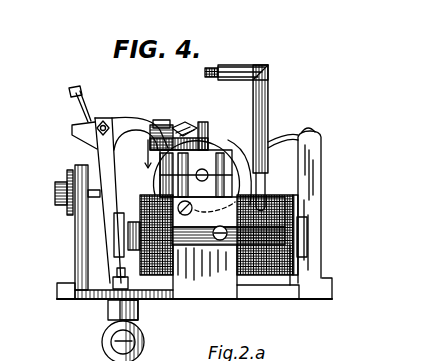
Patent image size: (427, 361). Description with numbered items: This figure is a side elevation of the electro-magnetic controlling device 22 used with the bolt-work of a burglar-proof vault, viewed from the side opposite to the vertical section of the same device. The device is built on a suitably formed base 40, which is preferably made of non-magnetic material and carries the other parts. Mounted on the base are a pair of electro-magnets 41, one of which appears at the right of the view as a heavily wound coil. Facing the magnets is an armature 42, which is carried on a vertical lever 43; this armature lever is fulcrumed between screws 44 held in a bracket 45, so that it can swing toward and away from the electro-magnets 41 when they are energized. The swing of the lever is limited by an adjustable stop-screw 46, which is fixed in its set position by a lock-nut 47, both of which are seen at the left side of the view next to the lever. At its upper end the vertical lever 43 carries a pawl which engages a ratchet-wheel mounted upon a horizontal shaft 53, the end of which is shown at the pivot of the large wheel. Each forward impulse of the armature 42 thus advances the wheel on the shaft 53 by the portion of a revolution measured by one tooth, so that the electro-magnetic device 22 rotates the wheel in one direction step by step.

The electro-magnetic device 22 is at (175, 122).
The horizontal shaft 53 is at (205, 171).
The vertical lever 43 is at (101, 152).
The lock-nut 47 is at (67, 174).
The adjustable stop-screw 46 is at (54, 203).
The armature 42 is at (116, 238).
The bracket 45 is at (139, 312).
The screws 44 is at (144, 342).
The electro-magnets 41 is at (268, 283).
The base 40 is at (290, 292).